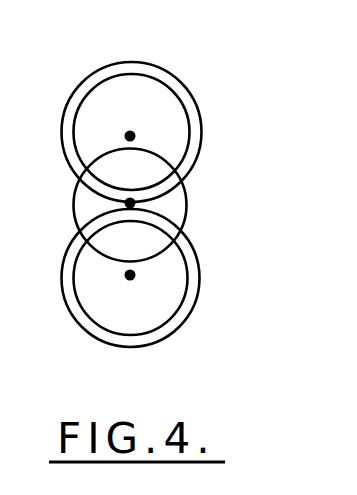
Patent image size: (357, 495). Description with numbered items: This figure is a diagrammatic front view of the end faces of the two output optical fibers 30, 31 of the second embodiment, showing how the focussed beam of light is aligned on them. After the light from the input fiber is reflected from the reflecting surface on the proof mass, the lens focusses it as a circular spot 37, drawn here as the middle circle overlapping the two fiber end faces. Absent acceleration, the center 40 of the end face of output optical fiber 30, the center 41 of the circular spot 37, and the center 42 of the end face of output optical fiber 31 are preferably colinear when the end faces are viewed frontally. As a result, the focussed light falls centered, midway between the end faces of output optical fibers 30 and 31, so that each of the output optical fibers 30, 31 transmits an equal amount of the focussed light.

The output optical fiber 30 is at (181, 85).
The output optical fiber 31 is at (199, 282).
The circular spot 37 is at (188, 203).
The center of the end face of the output optical fiber 30 40 is at (130, 134).
The center of the circular spot 41 is at (130, 203).
The center of the end face of the output optical fiber 31 42 is at (130, 278).